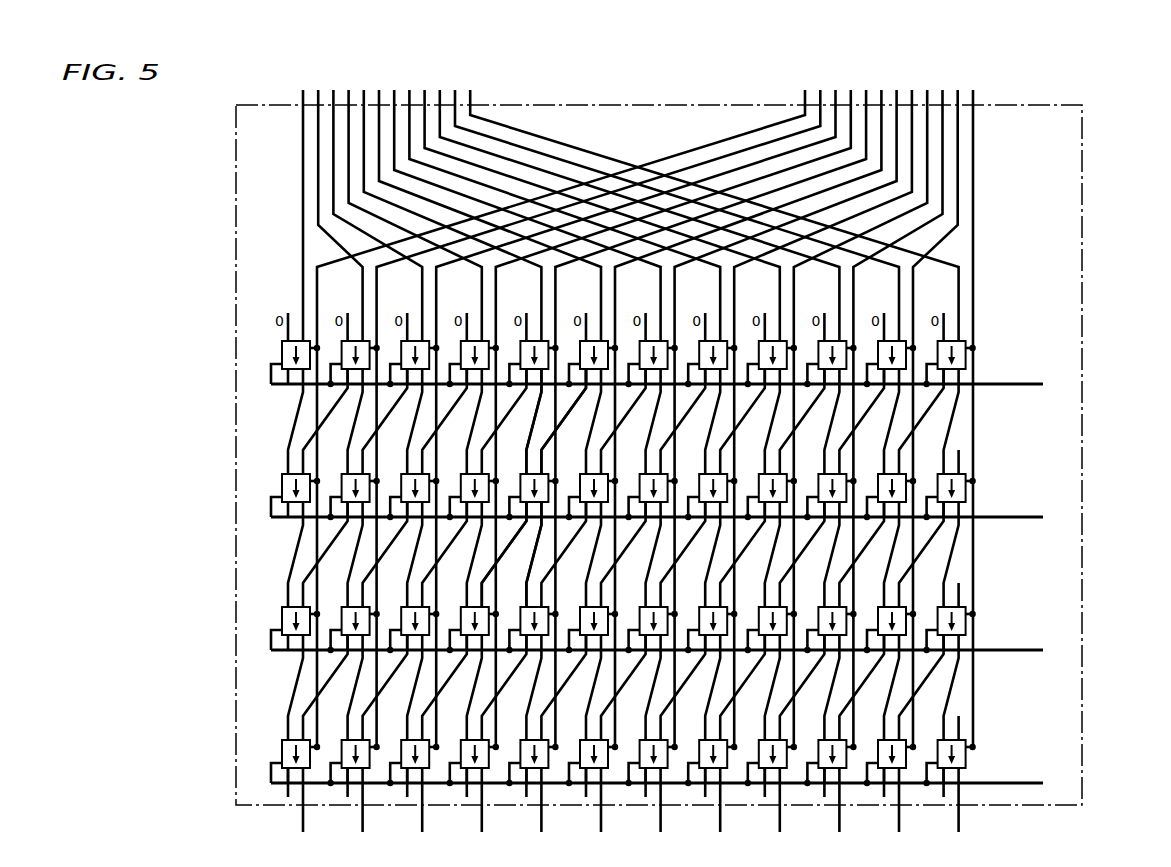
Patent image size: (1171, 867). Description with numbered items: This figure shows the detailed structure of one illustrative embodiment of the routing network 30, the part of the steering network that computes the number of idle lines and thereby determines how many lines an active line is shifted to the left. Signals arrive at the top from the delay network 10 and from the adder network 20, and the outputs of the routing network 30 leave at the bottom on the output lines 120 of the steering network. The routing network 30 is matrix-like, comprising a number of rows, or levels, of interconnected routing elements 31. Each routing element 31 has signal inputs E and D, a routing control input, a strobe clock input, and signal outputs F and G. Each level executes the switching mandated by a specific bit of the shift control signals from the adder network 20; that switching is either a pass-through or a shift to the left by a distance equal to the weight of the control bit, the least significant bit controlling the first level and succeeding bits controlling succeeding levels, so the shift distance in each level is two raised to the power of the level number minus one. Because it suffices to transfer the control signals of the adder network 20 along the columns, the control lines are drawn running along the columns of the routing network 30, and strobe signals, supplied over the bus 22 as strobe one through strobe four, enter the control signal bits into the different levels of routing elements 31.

The delay network 10 is at (482, 93).
The adder network 20 is at (985, 93).
The bus 22 is at (1087, 378).
The routing network 30 is at (1055, 105).
The routing element 31 is at (966, 343).
The output lines 120 is at (601, 822).
The signal input D is at (546, 444).
The signal input E is at (525, 447).
The signal output F is at (543, 552).
The signal output G is at (503, 545).